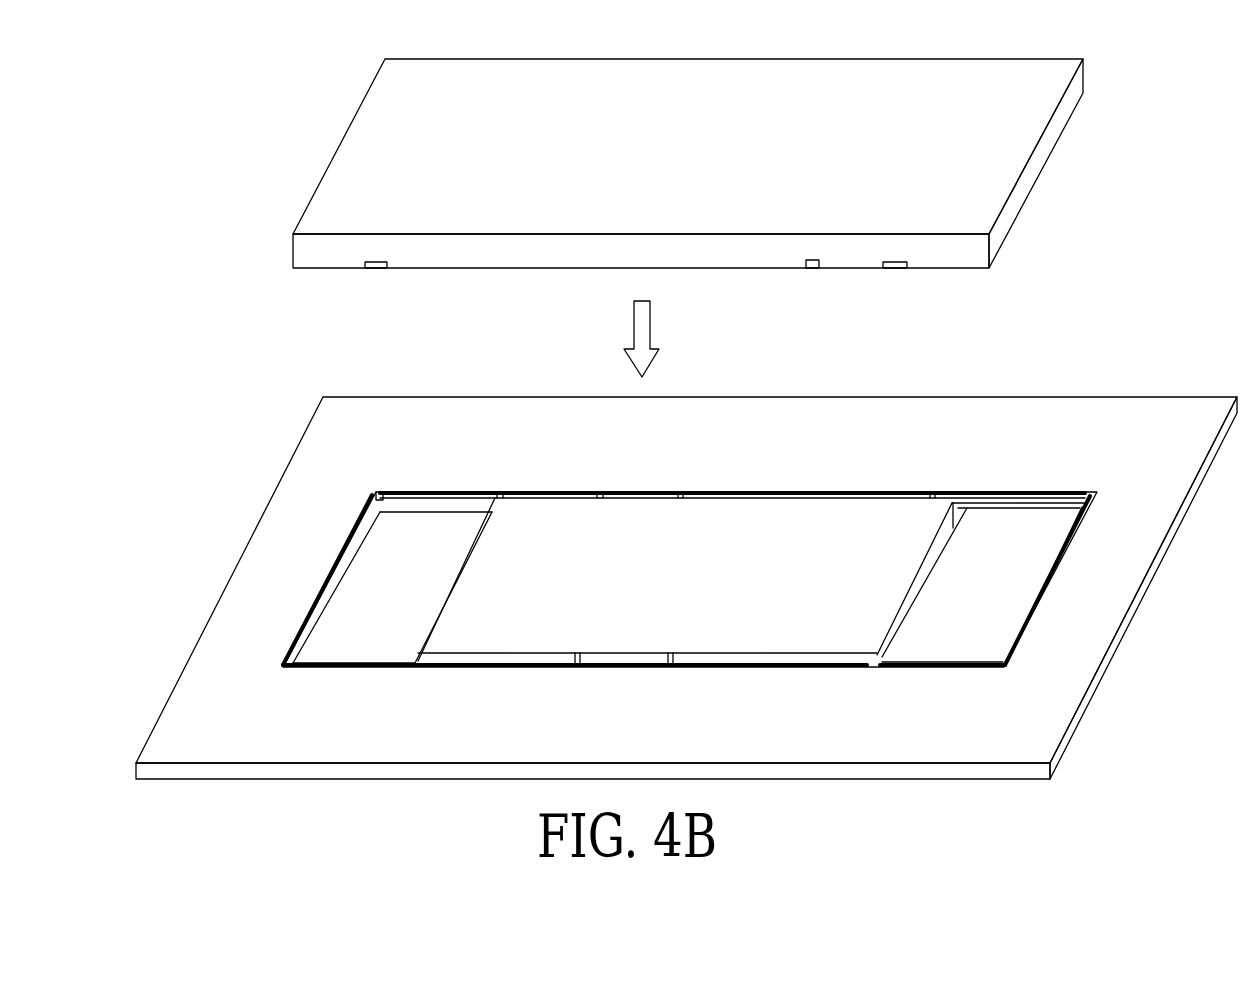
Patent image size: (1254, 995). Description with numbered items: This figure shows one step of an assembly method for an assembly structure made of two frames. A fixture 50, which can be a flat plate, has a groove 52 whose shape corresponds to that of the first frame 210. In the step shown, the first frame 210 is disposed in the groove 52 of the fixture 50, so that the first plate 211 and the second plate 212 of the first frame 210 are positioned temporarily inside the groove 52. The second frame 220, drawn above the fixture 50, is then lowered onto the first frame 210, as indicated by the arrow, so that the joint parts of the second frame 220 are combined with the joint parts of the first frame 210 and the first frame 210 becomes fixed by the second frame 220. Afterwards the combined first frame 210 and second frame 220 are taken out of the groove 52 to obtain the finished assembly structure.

The second frame 220 is at (346, 153).
The fixture 50 is at (258, 580).
The groove 52 is at (1037, 613).
The first frame 210 is at (738, 464).
The first plate 211 is at (360, 638).
The second plate 212 is at (1043, 518).